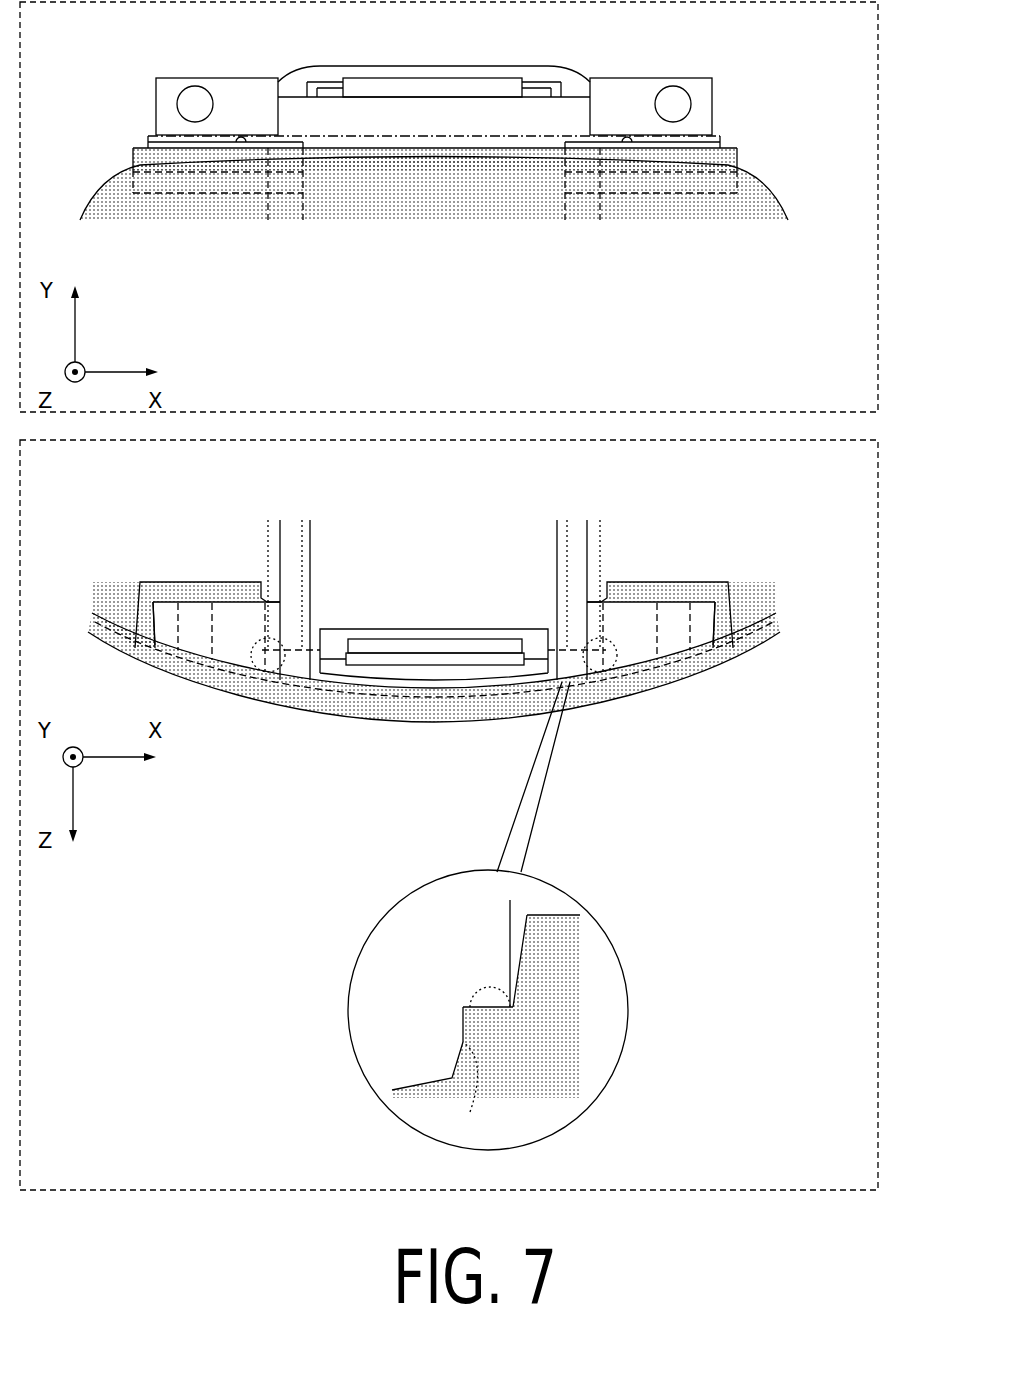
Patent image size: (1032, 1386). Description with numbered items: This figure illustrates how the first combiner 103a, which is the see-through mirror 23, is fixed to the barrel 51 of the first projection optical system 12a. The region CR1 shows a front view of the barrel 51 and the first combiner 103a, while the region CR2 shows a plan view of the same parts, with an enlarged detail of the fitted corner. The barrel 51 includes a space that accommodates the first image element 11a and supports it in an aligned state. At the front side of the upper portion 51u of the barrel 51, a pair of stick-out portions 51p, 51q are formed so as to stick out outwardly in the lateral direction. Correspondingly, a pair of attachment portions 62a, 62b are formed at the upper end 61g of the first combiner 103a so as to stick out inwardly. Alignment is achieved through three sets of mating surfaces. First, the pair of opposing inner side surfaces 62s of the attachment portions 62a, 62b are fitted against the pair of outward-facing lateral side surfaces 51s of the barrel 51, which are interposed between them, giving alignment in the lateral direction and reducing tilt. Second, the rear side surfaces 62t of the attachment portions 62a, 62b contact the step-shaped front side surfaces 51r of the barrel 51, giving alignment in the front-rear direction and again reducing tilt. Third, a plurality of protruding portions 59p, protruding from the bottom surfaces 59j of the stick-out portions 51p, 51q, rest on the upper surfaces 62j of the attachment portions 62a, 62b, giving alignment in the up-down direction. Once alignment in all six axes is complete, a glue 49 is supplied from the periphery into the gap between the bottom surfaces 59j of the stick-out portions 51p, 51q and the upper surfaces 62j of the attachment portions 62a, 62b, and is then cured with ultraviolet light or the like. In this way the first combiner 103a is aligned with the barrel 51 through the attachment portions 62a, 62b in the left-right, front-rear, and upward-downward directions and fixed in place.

The barrel 51 is at (471, 580).
The first projection optical system 12a is at (498, 580).
The stick-out portion 51p is at (240, 88).
The stick-out portion 51q is at (637, 90).
The upper portion 51u is at (568, 86).
The step-shaped front side surface 51r is at (273, 640).
The lateral side surface 51s is at (303, 160).
The first image element 11a is at (437, 83).
The glue 49 is at (368, 135).
The attachment portion 62a is at (145, 147).
The attachment portion 62b is at (717, 145).
The inner side surface 62s is at (314, 160).
The rear side surface 62t is at (283, 648).
The upper surface 62j is at (213, 160).
The bottom surface 59j is at (175, 160).
The protruding portion 59p is at (240, 148).
The upper end 61g is at (430, 158).
The first combiner 103a is at (458, 510).
The see-through mirror 23 is at (461, 510).
The region CR1 is at (882, 60).
The region CR2 is at (882, 498).